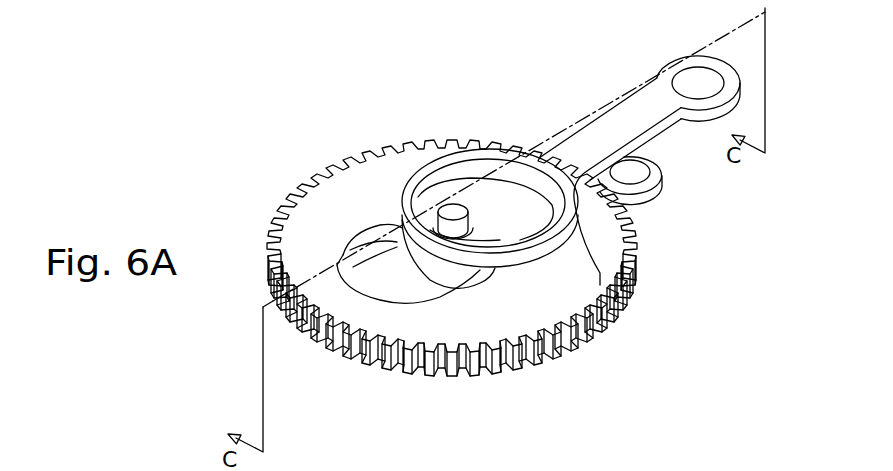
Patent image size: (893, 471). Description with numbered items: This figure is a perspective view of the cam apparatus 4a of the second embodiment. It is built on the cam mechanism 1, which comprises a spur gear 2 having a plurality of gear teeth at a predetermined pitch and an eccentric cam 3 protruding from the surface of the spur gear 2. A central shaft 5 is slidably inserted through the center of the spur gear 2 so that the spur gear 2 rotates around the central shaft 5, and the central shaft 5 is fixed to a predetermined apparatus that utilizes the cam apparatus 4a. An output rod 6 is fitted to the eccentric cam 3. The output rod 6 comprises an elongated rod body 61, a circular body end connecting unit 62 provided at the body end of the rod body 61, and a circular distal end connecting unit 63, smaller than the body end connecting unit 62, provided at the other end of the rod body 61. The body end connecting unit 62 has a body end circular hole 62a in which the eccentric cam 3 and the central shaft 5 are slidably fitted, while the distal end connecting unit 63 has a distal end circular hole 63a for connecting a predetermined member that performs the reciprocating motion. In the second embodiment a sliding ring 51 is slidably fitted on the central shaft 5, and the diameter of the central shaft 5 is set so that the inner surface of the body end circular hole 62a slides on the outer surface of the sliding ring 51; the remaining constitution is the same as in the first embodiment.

The cam mechanism 1 is at (483, 258).
The spur gear 2 is at (567, 303).
The eccentric cam 3 is at (617, 283).
The cam apparatus 4a is at (523, 89).
The central shaft 5 is at (453, 205).
The output rod 6 is at (676, 153).
The sliding ring 51 is at (485, 242).
The rod body 61 is at (600, 133).
The body end connecting unit 62 is at (550, 254).
The body end circular hole 62a is at (558, 218).
The distal end connecting unit 63 is at (745, 82).
The distal end circular hole 63a is at (698, 82).